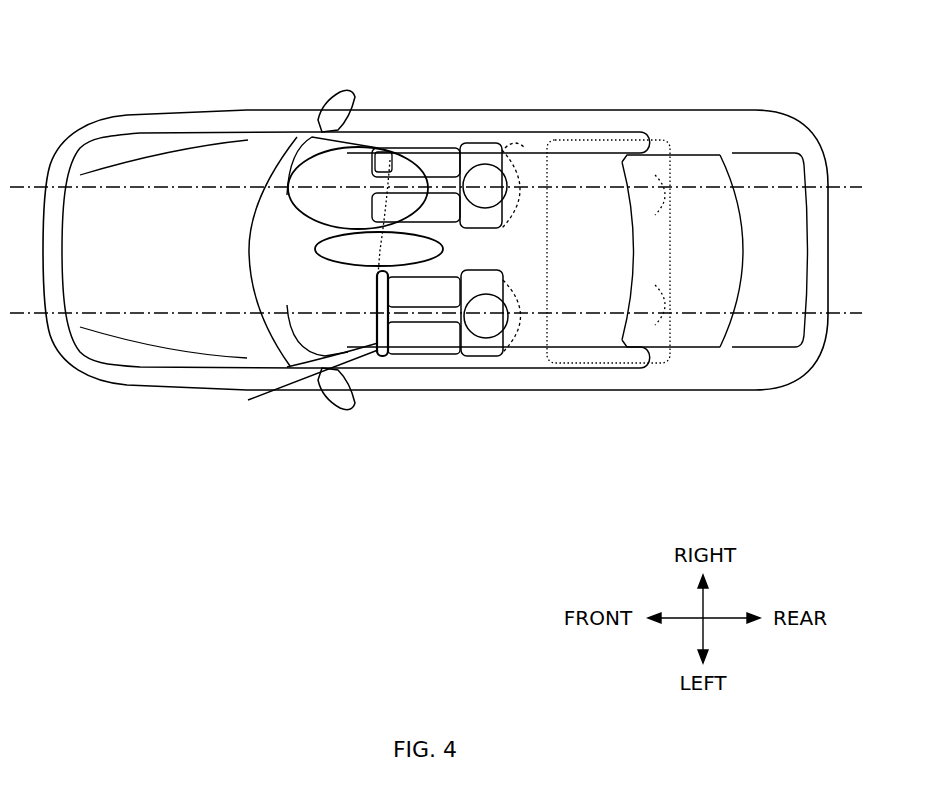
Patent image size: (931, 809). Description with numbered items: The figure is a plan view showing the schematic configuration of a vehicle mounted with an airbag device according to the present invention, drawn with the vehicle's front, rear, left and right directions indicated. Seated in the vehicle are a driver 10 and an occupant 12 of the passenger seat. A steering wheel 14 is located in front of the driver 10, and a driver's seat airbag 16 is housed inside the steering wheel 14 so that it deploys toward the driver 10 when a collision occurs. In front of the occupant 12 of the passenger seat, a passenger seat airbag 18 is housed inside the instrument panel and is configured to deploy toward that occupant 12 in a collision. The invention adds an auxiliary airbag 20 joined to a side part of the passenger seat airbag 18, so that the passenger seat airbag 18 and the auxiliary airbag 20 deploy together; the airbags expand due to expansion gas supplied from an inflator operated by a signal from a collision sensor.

The driver 10 is at (500, 357).
The occupant of the passenger seat 12 is at (491, 143).
The steering wheel 14 is at (300, 375).
The driver's seat airbag 16 is at (413, 357).
The passenger seat airbag 18 is at (316, 126).
The auxiliary airbag 20 is at (426, 240).